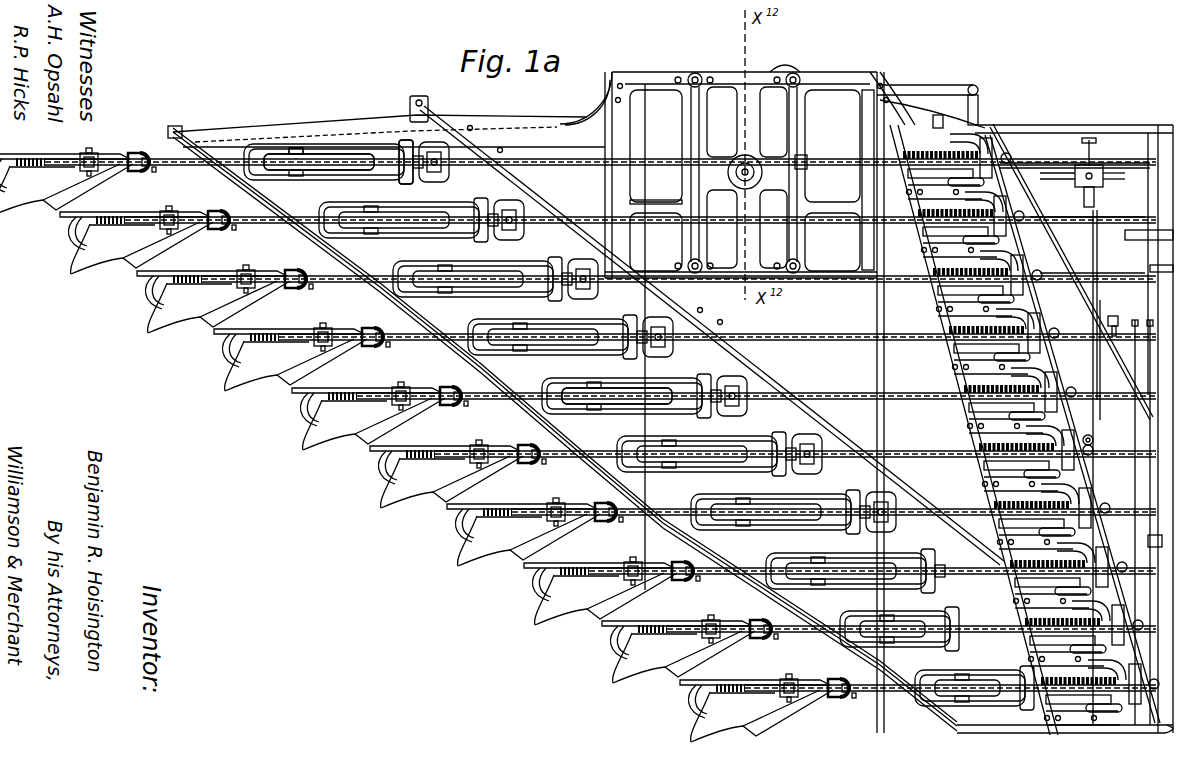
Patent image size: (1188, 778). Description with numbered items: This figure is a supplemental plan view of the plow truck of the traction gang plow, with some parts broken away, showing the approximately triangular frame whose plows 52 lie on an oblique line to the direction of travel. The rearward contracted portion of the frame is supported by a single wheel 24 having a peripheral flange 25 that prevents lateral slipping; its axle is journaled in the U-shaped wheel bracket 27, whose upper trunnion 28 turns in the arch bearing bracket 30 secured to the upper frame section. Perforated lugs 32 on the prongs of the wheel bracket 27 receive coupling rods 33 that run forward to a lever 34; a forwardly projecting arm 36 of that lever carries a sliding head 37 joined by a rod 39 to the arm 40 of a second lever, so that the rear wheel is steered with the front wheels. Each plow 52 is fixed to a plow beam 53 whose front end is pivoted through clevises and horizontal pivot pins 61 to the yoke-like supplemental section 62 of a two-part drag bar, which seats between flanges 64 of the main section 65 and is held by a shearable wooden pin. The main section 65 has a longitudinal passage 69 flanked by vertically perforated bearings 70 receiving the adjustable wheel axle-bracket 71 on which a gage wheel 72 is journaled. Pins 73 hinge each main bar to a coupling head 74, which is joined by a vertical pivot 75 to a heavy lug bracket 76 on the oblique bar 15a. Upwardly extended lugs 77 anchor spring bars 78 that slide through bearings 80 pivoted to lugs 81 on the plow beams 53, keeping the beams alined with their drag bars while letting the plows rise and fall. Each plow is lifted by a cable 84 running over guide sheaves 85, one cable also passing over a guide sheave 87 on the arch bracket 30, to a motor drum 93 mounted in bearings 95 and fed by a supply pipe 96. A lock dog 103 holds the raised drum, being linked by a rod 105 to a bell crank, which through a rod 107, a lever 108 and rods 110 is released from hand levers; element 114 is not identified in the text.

The oblique bar 15a is at (560, 213).
The single wheel 24 is at (652, 155).
The peripheral flange 25 is at (870, 200).
The wheel bracket 27 is at (808, 145).
The upper trunnion 28 is at (738, 185).
The arch bearing bracket 30 is at (688, 190).
The perforated lugs 32 is at (785, 70).
The coupling rods 33 is at (900, 88).
The lever 34 is at (979, 92).
The forwardly projecting arm 36 is at (1118, 181).
The sliding head 37 is at (1092, 186).
The rod 39 is at (1090, 265).
The arm 40 is at (1092, 441).
The plows 52 is at (150, 300).
The plow beams 53 is at (268, 328).
The horizontal pivot pins 61 is at (332, 200).
The supplemental section 62 is at (258, 145).
The flanges 64 is at (605, 333).
The main section 65 is at (400, 148).
The longitudinal passage 69 is at (308, 150).
The vertically perforated bearings 70 is at (293, 146).
The wheel axle-bracket 71 is at (612, 388).
The gage wheels 72 is at (318, 143).
The pins 73 is at (880, 490).
The coupling heads 74 is at (490, 205).
The vertical pivots 75 is at (800, 448).
The lug brackets 76 is at (447, 150).
The upwardly extended lugs 77 is at (395, 150).
The spring bars 78 is at (128, 150).
The bearings 80 is at (100, 168).
The lugs or bearings 81 is at (95, 152).
The cable 84 is at (525, 140).
The guide sheaves 85 is at (140, 172).
The guide sheave 87 is at (808, 162).
The motor drum 93 is at (922, 128).
The bearings 95 is at (945, 132).
The supply pipe 96 is at (1058, 194).
The lock dog 103 is at (1010, 130).
The rod 105 is at (1040, 278).
The rod 107 is at (1115, 133).
The lever 108 is at (1112, 316).
The rods 110 is at (1135, 350).
The block 114 is at (1148, 540).